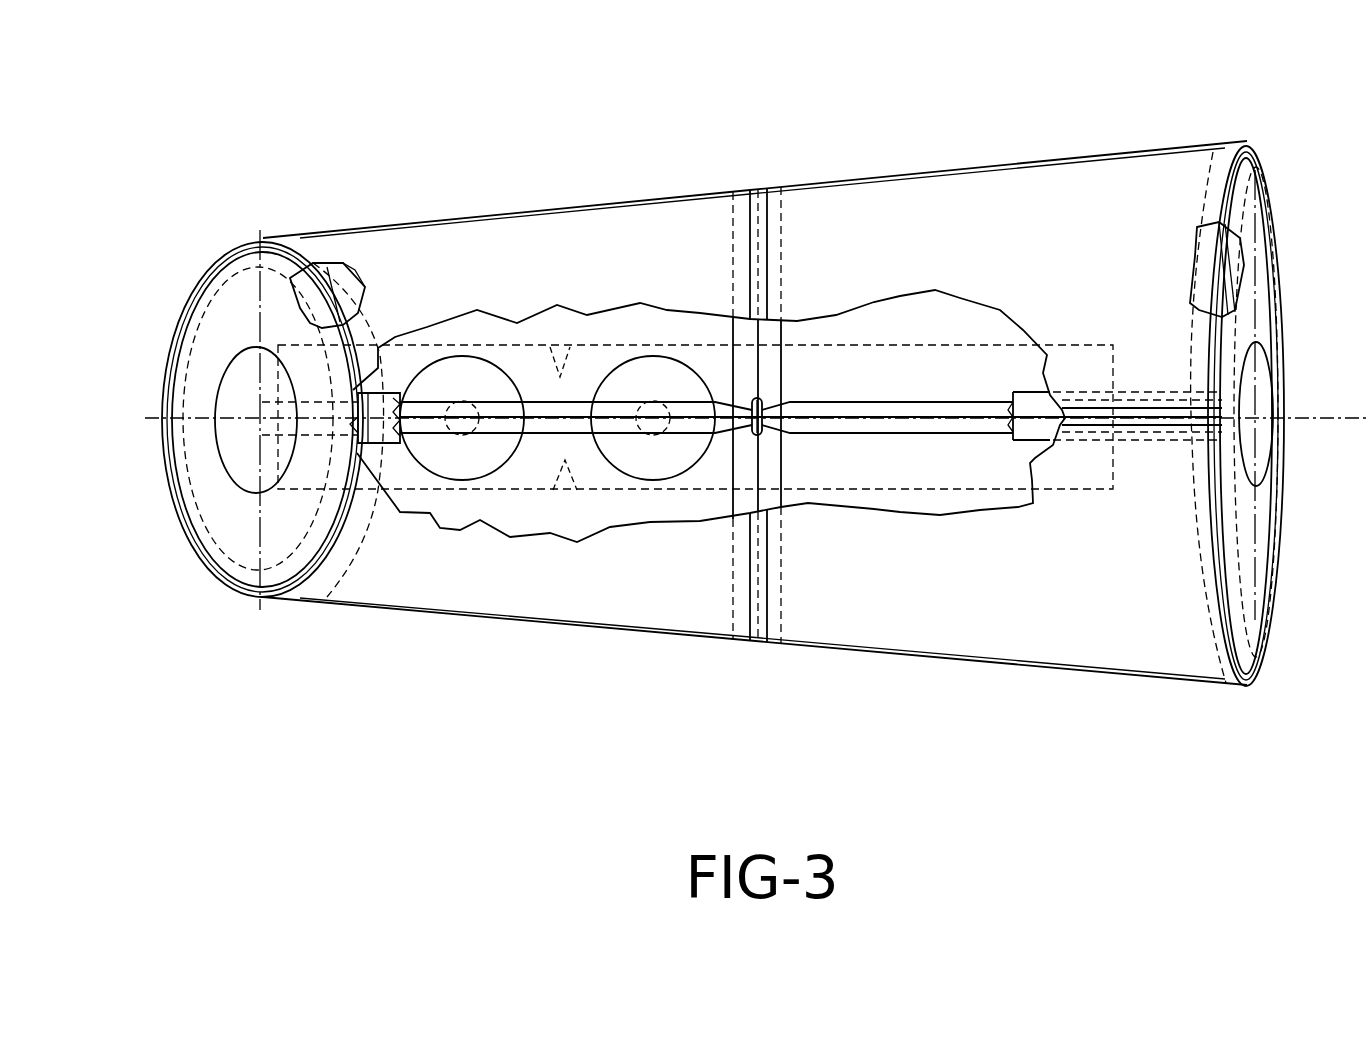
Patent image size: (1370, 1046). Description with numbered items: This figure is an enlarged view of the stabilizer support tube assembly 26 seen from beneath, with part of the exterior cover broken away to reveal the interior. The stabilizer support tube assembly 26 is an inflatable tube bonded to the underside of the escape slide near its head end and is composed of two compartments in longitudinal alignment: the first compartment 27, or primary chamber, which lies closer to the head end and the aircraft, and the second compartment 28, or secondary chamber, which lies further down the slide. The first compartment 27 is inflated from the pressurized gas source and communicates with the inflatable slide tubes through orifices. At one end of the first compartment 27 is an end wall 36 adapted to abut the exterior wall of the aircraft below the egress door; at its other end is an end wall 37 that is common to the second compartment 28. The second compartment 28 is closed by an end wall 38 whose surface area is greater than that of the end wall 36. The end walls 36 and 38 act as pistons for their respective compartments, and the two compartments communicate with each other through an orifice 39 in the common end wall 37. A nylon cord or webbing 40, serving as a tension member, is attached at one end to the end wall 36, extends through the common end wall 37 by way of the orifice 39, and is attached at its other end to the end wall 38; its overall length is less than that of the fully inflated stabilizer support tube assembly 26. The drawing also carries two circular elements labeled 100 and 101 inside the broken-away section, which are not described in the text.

The stabilizer support tube assembly 26 is at (318, 150).
The first compartment 27 is at (486, 572).
The second compartment 28 is at (1035, 614).
The end wall 36 is at (233, 307).
The end wall 37 is at (758, 462).
The end wall 38 is at (1253, 208).
The orifice 39 is at (758, 400).
The nylon cord or webbing 40 is at (886, 421).
The first disc 100 is at (462, 412).
The second disc 101 is at (652, 412).